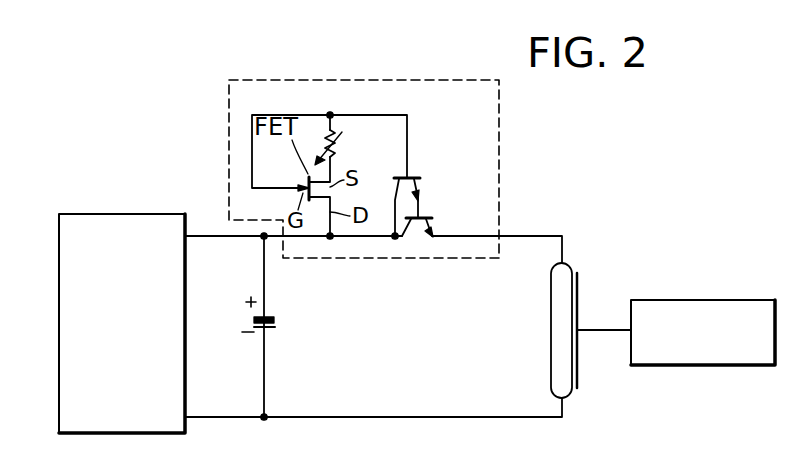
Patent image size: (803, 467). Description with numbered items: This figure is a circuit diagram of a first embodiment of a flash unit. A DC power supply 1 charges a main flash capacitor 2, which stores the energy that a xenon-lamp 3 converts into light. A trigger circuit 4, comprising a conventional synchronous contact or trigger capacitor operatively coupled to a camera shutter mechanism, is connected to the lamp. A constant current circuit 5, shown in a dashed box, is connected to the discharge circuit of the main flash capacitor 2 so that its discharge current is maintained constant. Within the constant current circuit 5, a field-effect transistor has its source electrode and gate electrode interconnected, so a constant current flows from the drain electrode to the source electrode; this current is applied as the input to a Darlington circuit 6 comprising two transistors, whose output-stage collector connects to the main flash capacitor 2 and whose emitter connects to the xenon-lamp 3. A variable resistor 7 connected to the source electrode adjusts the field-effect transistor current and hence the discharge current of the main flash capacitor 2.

The DC power supply 1 is at (65, 366).
The main flash capacitor 2 is at (270, 333).
The xenon-lamp 3 is at (563, 272).
The trigger circuit 4 is at (698, 300).
The constant current circuit 5 is at (473, 122).
The Darlington circuit 6 is at (433, 216).
The variable resistor 7 is at (338, 148).